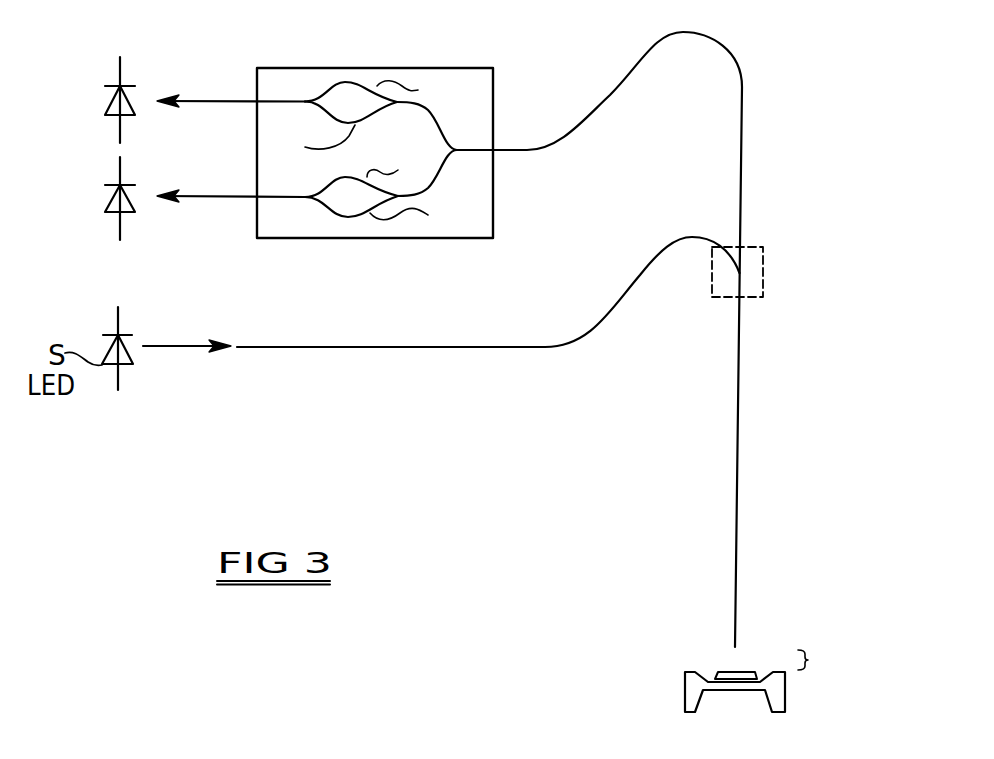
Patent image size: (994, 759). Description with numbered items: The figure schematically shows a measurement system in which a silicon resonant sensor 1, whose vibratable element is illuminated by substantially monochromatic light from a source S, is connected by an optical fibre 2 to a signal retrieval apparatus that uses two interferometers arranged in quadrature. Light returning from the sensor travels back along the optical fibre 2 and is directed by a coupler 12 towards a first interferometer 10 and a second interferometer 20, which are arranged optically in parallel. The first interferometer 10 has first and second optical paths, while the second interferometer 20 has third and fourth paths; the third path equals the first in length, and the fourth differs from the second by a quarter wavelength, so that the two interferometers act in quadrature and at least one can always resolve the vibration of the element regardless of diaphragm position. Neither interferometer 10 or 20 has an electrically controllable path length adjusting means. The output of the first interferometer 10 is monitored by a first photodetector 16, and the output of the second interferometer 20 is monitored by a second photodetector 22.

The first photodetector 16 is at (107, 109).
The second photodetector 22 is at (105, 209).
The first interferometer 10 is at (500, 75).
The second interferometer 20 is at (500, 178).
The coupler 12 is at (763, 266).
The optical fibre 2 is at (736, 570).
The silicon resonant sensor 1 is at (785, 692).